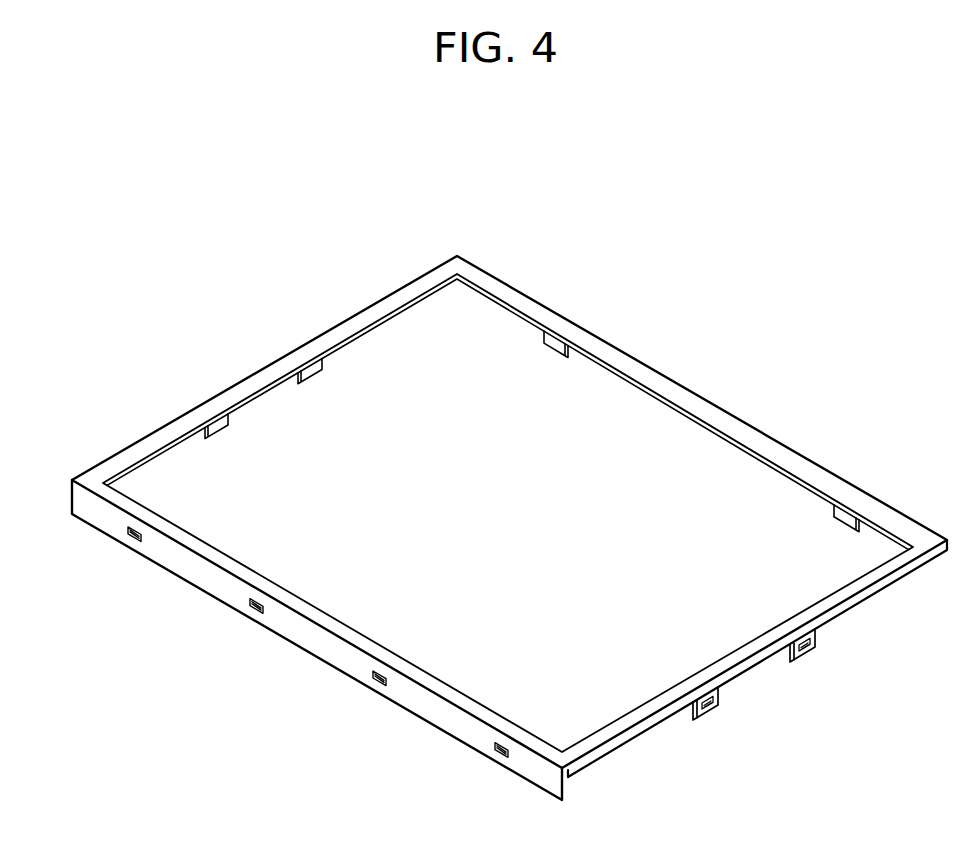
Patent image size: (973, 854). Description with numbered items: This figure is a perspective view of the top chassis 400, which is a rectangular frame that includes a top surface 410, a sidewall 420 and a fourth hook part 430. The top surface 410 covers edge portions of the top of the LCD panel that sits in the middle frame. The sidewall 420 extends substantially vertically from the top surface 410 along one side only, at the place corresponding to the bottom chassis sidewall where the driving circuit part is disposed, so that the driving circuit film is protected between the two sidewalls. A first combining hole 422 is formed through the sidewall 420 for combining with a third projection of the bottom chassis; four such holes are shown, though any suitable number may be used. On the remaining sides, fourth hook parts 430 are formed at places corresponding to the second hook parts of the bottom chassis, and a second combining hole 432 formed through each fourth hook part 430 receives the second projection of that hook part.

The top chassis 400 is at (560, 217).
The top surface 410 is at (733, 659).
The sidewall 420 is at (333, 651).
The first combining hole 422 is at (497, 756).
The fourth hook part 430 is at (806, 656).
The second combining hole 432 is at (811, 647).